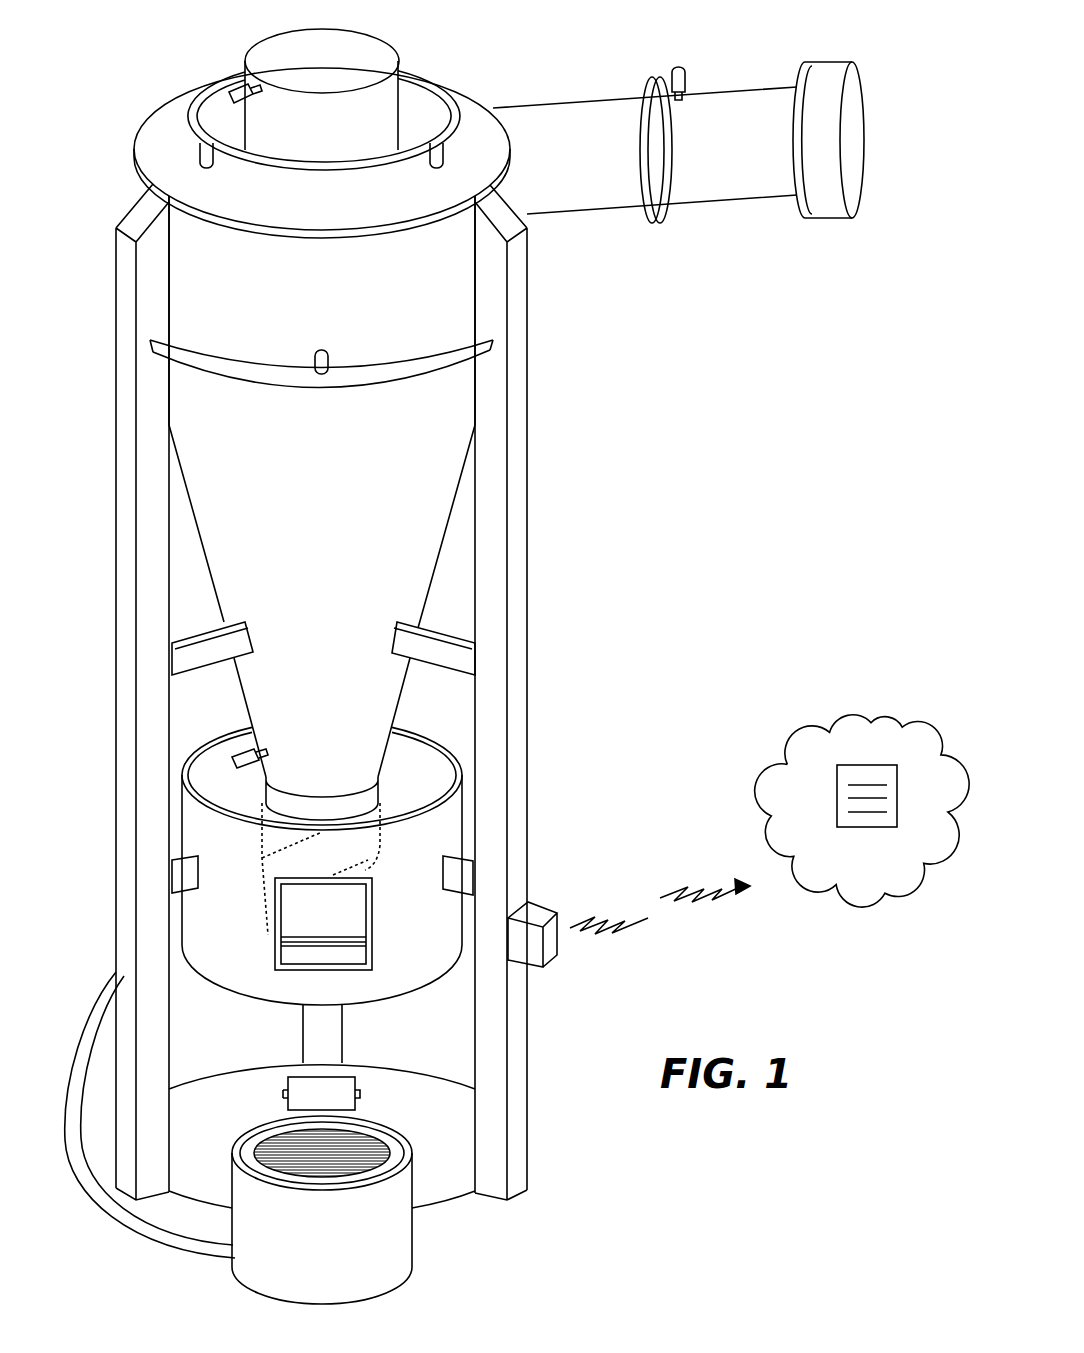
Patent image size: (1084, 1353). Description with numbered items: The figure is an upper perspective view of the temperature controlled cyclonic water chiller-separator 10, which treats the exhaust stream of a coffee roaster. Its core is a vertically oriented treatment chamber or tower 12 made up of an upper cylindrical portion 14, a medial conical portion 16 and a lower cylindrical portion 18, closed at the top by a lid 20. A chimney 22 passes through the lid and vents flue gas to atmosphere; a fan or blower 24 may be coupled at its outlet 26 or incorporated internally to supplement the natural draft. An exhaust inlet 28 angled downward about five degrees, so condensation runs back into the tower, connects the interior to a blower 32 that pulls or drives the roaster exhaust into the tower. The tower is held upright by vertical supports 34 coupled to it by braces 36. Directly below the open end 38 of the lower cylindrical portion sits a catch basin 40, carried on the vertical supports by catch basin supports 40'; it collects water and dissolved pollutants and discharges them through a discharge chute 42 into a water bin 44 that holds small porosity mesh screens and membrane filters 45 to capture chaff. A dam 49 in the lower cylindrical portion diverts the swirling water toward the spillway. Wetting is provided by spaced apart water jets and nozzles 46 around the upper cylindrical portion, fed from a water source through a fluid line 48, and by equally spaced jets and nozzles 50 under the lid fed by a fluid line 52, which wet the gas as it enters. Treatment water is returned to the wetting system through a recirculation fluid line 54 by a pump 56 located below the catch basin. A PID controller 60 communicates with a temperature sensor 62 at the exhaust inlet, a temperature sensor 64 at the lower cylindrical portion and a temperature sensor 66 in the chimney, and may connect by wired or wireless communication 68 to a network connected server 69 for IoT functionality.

The temperature controlled cyclonic water chiller-separator 10 is at (628, 388).
The treatment chamber or tower 12 is at (178, 484).
The upper cylindrical portion 14 is at (188, 252).
The medial conical portion 16 is at (222, 510).
The lower cylindrical portion 18 is at (205, 805).
The lid 20 is at (466, 110).
The chimney 22 is at (259, 40).
The fan or blower 24 is at (388, 110).
The outlet 26 is at (309, 50).
The exhaust inlet 28 is at (578, 197).
The blower 32 is at (832, 70).
The vertical supports 34 is at (122, 260).
The braces 36 is at (186, 660).
The open end 38 is at (370, 870).
The catch basin 40 is at (264, 890).
The catch basin supports 40' is at (328, 889).
The discharge chute 42 is at (270, 933).
The water bin 44 is at (380, 1210).
The mesh screens and membrane filters 45 is at (273, 1173).
The water jets and nozzles 46 is at (318, 350).
The fluid line 48 is at (487, 348).
The dam 49 is at (373, 813).
The jets and nozzles 50 is at (200, 153).
The fluid line 52 is at (229, 72).
The recirculation fluid line 54 is at (150, 1232).
The pump 56 is at (287, 1105).
The PID controller 60 is at (556, 903).
The temperature sensor 62 is at (683, 66).
The temperature sensor 64 is at (232, 758).
The temperature sensor 66 is at (229, 94).
The wired or wireless communication 68 is at (707, 880).
The network connected server 69 is at (843, 730).